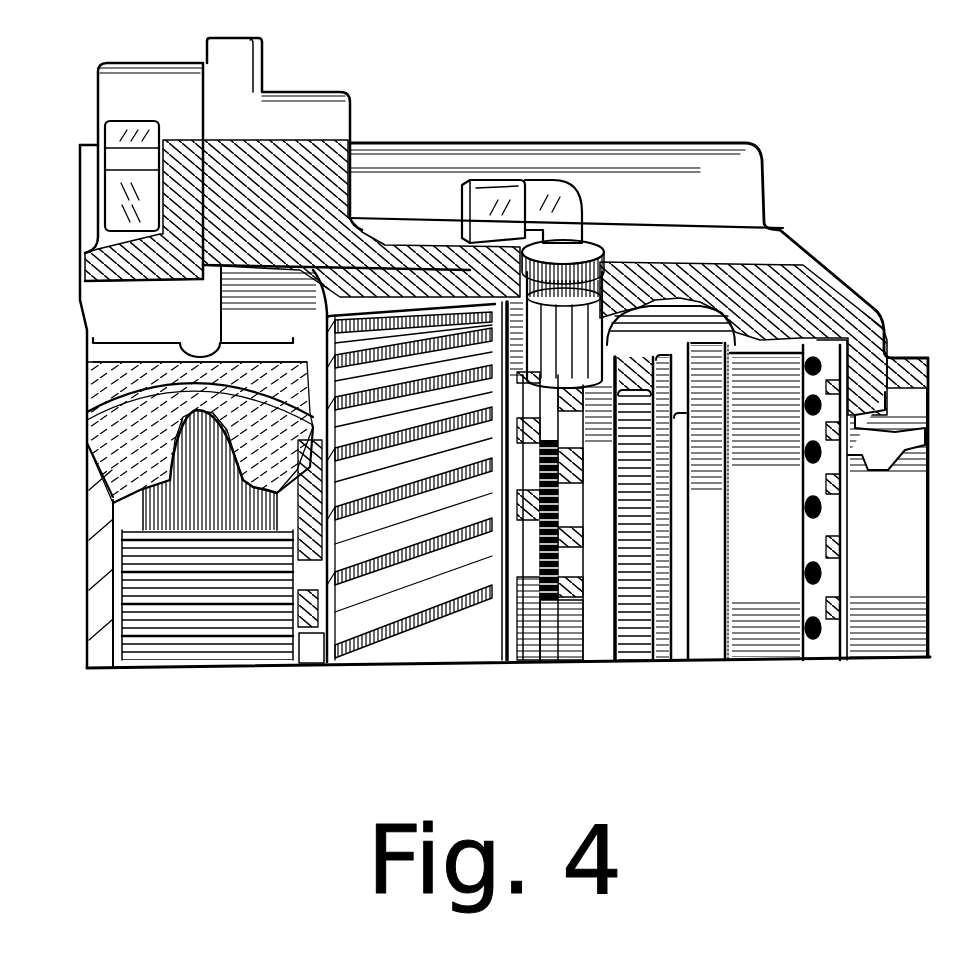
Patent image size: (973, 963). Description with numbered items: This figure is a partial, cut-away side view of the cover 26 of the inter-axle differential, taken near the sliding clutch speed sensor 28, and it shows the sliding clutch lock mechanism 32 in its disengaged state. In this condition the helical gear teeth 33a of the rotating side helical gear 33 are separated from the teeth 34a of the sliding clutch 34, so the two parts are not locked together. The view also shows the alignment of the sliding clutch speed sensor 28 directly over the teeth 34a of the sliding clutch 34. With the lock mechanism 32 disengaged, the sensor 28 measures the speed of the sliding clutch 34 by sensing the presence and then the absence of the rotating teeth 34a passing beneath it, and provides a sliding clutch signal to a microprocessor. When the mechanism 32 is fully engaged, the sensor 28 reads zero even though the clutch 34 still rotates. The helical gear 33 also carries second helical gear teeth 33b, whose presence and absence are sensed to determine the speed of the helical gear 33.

The cover 26 is at (695, 162).
The sliding clutch speed sensor 28 is at (500, 190).
The sliding clutch lock mechanism 32 is at (590, 95).
The rotating side helical gear 33 is at (328, 667).
The helical gear teeth 33a is at (528, 630).
The second helical gear teeth 33b is at (390, 570).
The sliding clutch 34 is at (633, 590).
The teeth of the sliding clutch 34a is at (575, 588).